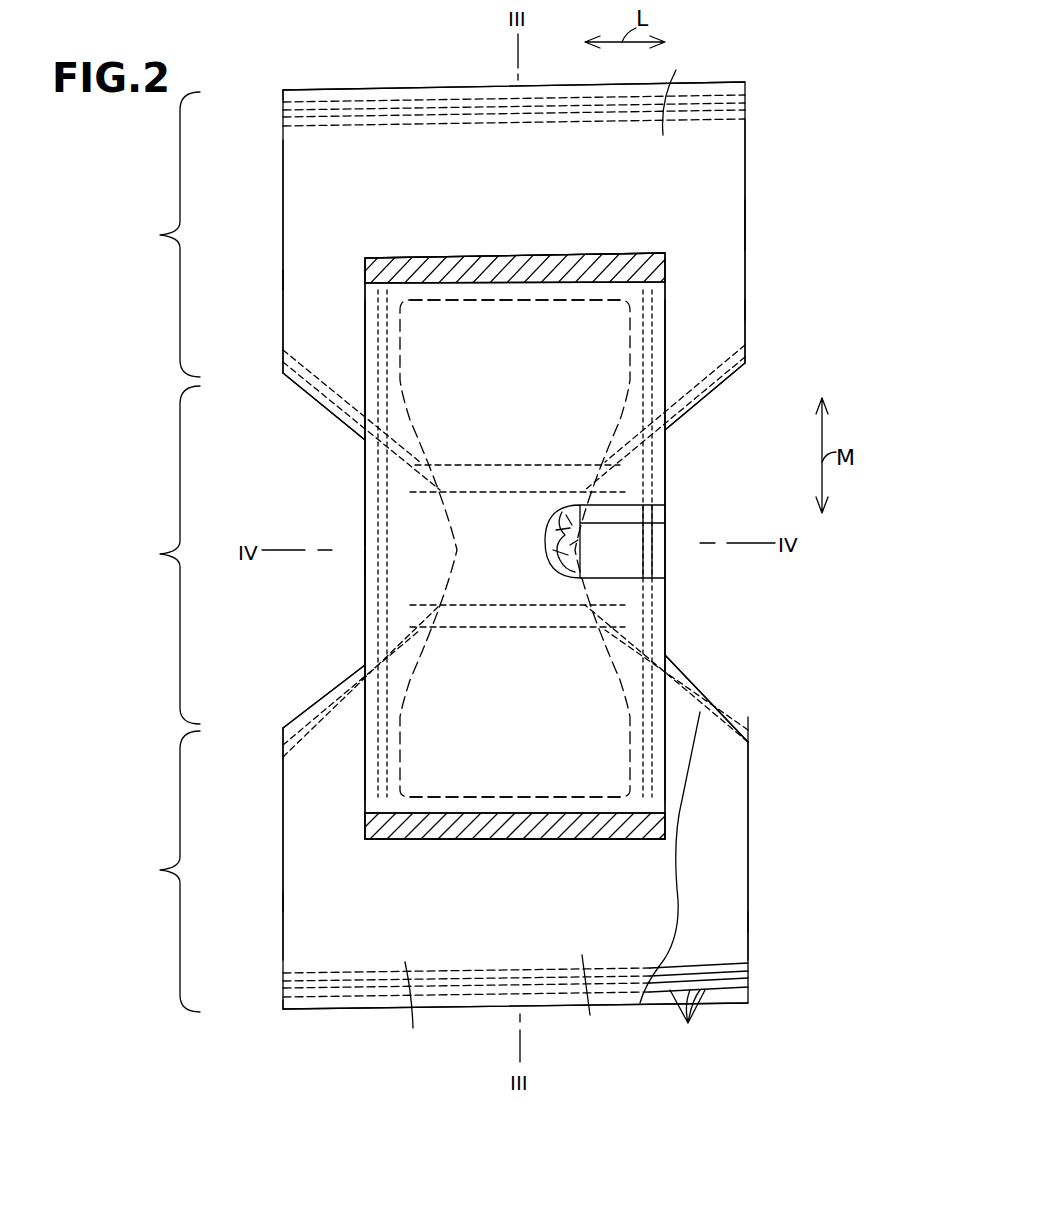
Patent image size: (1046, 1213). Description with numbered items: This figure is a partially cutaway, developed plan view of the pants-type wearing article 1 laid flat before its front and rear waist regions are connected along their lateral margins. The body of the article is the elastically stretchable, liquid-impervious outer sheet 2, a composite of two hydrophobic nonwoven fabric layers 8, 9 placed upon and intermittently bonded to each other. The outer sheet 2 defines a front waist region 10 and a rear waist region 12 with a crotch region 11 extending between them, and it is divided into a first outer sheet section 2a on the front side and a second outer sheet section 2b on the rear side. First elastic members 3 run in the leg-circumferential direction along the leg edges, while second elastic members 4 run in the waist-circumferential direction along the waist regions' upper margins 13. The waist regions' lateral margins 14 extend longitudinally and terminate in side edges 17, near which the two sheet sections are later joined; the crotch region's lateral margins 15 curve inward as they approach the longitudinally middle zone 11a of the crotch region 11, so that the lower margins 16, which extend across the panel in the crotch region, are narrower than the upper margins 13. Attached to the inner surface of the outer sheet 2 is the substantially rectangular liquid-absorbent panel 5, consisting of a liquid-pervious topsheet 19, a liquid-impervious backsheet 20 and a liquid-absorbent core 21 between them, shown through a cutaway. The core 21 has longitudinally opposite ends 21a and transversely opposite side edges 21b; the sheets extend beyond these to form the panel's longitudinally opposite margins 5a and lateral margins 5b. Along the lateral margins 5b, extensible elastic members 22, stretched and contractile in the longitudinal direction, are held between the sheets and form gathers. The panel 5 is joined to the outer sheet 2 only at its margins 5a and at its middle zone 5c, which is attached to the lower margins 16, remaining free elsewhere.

The wearing article 1 is at (764, 43).
The outer sheet 2 is at (745, 82).
The first outer sheet section 2a is at (283, 1010).
The second outer sheet section 2b is at (283, 90).
The first elastic members 3 is at (320, 400).
The second elastic members 4 is at (480, 100).
The liquid-absorbent panel 5 is at (668, 256).
The longitudinally opposite margins of the panel 5a is at (598, 258).
The transversely opposite lateral margins of the panel 5b is at (370, 395).
The middle zone of the panel 5c is at (668, 605).
The nonwoven fabric layer 8 is at (730, 226).
The nonwoven fabric layer 9 is at (720, 172).
The front waist region 10 is at (162, 871).
The crotch region 11 is at (162, 555).
The longitudinally middle zone of the crotch region 11a is at (405, 530).
The rear waist region 12 is at (162, 234).
The waist regions' upper margins 13 is at (554, 552).
The waist regions' lateral margins 14 is at (300, 185).
The crotch region's lateral margins 15 is at (290, 375).
The lower margins 16 is at (540, 498).
The side edges 17 is at (283, 280).
The topsheet 19 is at (405, 556).
The backsheet 20 is at (668, 506).
The liquid-absorbent core 21 is at (560, 510).
The longitudinally opposite ends of the core 21a is at (488, 292).
The transversely opposite side edges of the core 21b is at (378, 505).
The extensible elastic members 22 is at (378, 598).